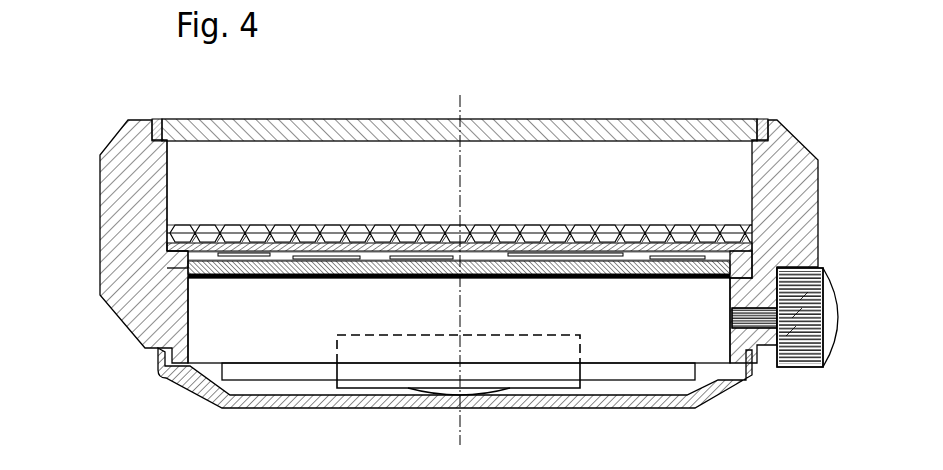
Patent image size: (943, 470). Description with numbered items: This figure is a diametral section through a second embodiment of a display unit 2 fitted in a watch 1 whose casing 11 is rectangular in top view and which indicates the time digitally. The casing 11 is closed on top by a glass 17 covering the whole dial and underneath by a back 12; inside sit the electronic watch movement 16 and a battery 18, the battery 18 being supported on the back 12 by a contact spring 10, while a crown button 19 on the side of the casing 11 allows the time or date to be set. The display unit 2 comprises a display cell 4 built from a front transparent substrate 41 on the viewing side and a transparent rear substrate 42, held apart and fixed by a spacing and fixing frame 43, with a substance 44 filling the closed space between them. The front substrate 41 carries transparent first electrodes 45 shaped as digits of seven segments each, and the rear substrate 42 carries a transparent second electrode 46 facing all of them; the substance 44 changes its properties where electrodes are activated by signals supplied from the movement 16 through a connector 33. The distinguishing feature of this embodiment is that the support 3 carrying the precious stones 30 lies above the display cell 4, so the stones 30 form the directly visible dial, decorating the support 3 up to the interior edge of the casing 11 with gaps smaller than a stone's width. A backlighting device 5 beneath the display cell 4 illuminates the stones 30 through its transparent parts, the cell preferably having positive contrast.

The watch 1 is at (151, 95).
The display unit 2 is at (157, 249).
The support 3 is at (206, 240).
The display cell 4 is at (270, 238).
The backlighting device 5 is at (268, 272).
The contact spring 10 is at (428, 393).
The casing 11 is at (783, 198).
The back 12 is at (545, 402).
The electronic watch movement 16 is at (641, 318).
The glass 17 is at (598, 136).
The battery 18 is at (367, 386).
The crown button 19 is at (828, 320).
The precious stones 30 is at (172, 216).
The connector 33 is at (198, 276).
The front transparent substrate 41 is at (696, 252).
The rear substrate 42 is at (780, 282).
The spacing and fixing frame 43 is at (233, 243).
The substance 44 is at (733, 254).
The first electrodes 45 is at (570, 258).
The second electrode 46 is at (150, 308).